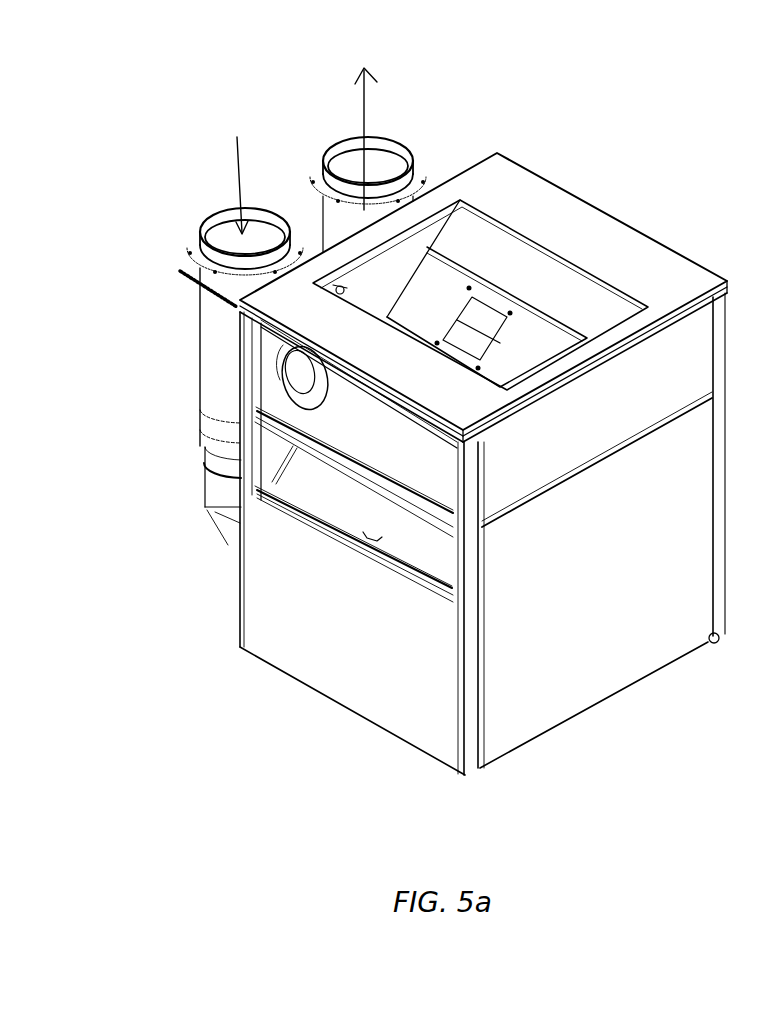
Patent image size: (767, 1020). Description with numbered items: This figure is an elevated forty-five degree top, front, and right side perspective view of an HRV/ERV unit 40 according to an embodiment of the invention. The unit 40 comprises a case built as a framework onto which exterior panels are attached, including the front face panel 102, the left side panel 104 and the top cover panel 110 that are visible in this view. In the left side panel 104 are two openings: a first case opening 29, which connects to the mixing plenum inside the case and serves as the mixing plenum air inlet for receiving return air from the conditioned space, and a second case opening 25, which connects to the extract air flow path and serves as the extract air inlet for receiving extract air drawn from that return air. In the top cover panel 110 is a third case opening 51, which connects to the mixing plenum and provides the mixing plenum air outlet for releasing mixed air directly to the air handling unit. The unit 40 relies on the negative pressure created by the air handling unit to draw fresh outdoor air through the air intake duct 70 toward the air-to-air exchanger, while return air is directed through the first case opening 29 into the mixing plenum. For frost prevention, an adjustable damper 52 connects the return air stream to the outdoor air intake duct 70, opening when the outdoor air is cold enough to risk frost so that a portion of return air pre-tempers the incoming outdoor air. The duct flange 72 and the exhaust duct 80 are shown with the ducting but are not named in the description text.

The HRV/ERV unit 40 is at (673, 178).
The top cover panel 110 is at (580, 217).
The third case opening 51 is at (402, 253).
The exhaust duct 80 is at (330, 217).
The air intake duct 70 is at (212, 350).
The duct flange 72 is at (208, 277).
The adjustable damper 52 is at (307, 385).
The first case opening 29 is at (387, 437).
The second case opening 25 is at (387, 513).
The left side panel 104 is at (370, 647).
The front face panel 102 is at (583, 643).